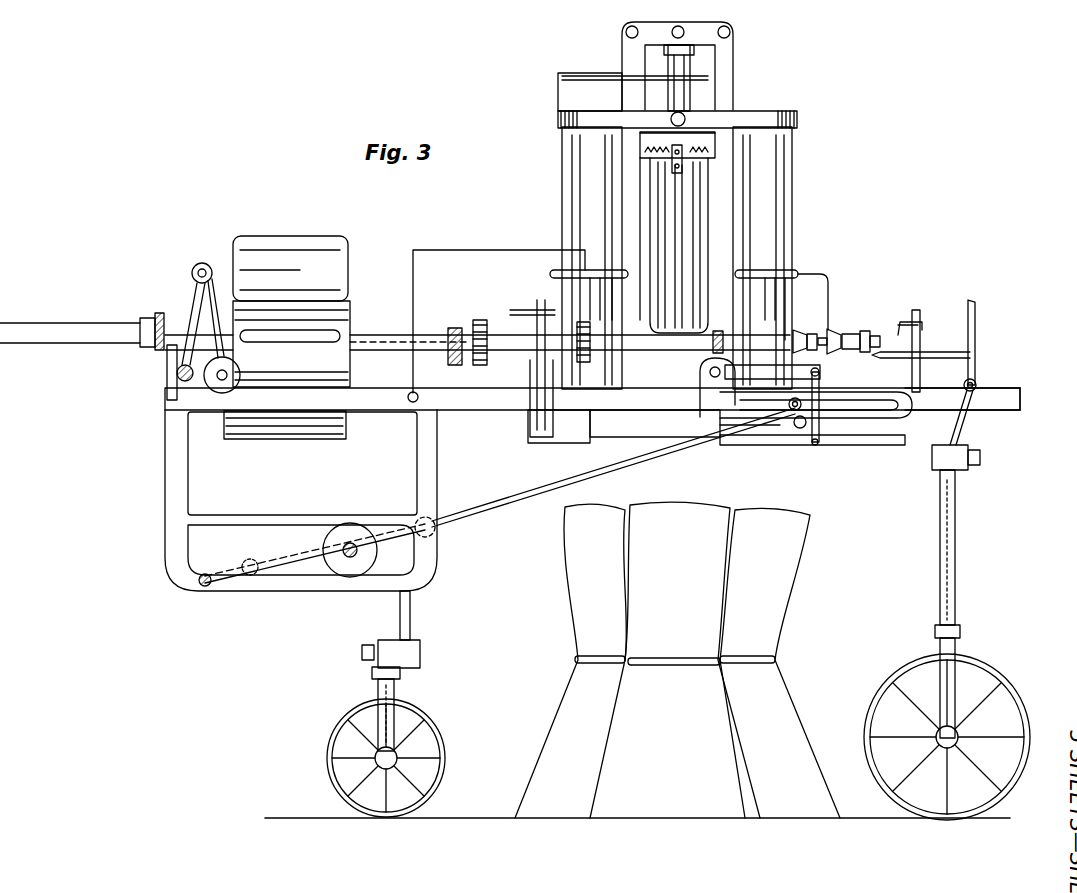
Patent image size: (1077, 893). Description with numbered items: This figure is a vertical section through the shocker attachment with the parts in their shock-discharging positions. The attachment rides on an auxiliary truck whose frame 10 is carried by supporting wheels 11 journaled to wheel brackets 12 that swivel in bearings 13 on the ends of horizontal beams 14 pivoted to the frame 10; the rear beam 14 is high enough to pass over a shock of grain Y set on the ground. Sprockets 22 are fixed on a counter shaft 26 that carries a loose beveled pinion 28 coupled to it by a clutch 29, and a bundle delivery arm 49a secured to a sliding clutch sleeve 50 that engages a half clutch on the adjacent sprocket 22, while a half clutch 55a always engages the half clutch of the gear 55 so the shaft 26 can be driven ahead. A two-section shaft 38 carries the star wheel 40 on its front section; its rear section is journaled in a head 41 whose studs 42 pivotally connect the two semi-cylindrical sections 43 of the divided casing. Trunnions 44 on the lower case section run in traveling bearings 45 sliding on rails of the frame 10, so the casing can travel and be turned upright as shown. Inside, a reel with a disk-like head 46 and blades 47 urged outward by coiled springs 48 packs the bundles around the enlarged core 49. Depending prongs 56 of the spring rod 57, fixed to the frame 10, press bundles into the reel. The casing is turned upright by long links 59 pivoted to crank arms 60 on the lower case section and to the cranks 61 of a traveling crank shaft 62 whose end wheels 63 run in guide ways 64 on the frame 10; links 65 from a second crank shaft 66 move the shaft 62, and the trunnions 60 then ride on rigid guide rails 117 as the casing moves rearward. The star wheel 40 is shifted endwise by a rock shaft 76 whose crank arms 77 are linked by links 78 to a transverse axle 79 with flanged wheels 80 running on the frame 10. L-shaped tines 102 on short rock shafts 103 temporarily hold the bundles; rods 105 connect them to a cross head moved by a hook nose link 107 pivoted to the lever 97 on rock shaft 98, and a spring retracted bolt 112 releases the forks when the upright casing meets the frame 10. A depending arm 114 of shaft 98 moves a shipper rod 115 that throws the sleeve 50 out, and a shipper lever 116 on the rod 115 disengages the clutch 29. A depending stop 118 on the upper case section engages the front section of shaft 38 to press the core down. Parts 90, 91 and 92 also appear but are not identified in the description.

The frame 10 is at (436, 447).
The supporting wheels 11 is at (432, 732).
The wheel brackets 12 is at (395, 697).
The bearings 13 is at (410, 620).
The horizontal beams 14 is at (965, 452).
The sprockets 22 is at (480, 318).
The counter shaft 26 is at (510, 345).
The beveled pinion 28 is at (801, 325).
The clutch 29 is at (825, 345).
The shaft 38 is at (680, 102).
The star wheel 40 is at (292, 448).
The head 41 is at (652, 133).
The studs 42 is at (670, 118).
The casing sections 43 is at (532, 214).
The trunnions 44 is at (712, 378).
The traveling bearings 45 is at (698, 388).
The disk-like head 46 is at (704, 164).
The reel blades 47 is at (690, 260).
The coiled springs 48 is at (643, 178).
The core 49 is at (690, 212).
The arm 49a is at (545, 412).
The clutch sleeve 50 is at (540, 338).
The gear 55 is at (833, 333).
The half clutch 55a is at (856, 336).
The depending prongs 56 is at (520, 310).
The spring rod 57 is at (413, 300).
The long links 59 is at (613, 475).
The crank arms 60 is at (800, 430).
The cranks 61 is at (420, 520).
The crank shaft 62 is at (346, 560).
The wheels 63 is at (332, 565).
The guide ways 64 is at (205, 575).
The links 65 is at (282, 565).
The second crank shaft 66 is at (200, 588).
The rock shaft 76 is at (178, 378).
The crank arms 77 is at (158, 352).
The links 78 is at (208, 282).
The transverse axle 79 is at (215, 378).
The flanged wheels 80 is at (220, 382).
The tube 90 is at (878, 440).
The inner rod 91 is at (883, 430).
The pulley 92 is at (790, 410).
The lever 97 is at (976, 332).
The rock shaft 98 is at (978, 382).
The L-shaped tines 102 is at (516, 268).
The short rock shafts 103 is at (790, 270).
The rods 105 is at (1010, 398).
The hook nose link 107 is at (938, 345).
The spring retracted bolt 112 is at (625, 395).
The depending arm 114 is at (958, 425).
The shipper rod 115 is at (857, 446).
The shipper lever 116 is at (820, 395).
The guide rails 117 is at (733, 430).
The depending stop 118 is at (578, 75).
The shock of grain Y is at (760, 612).